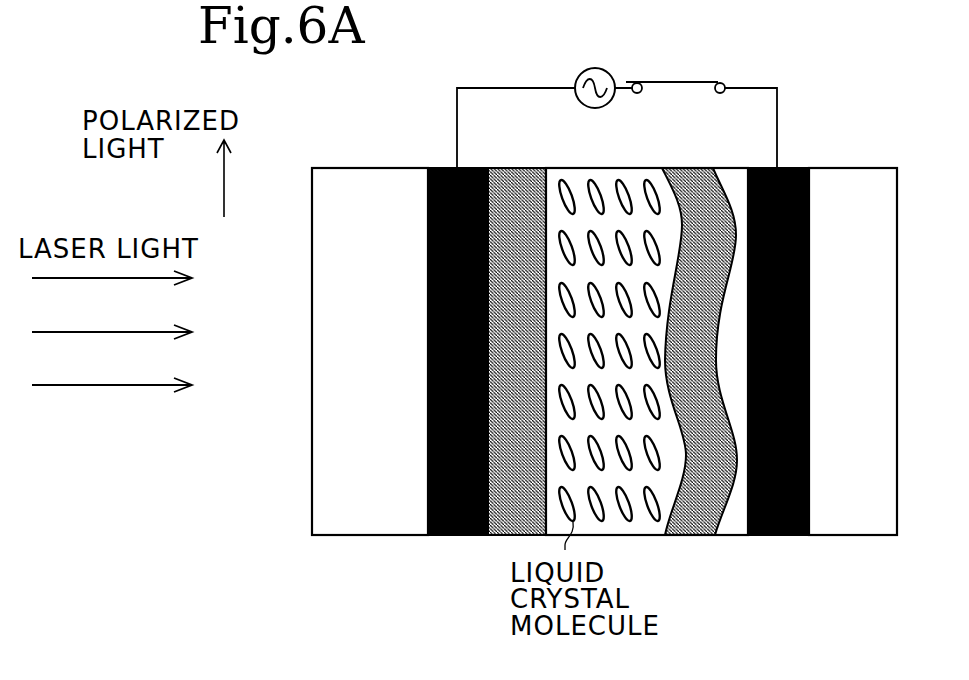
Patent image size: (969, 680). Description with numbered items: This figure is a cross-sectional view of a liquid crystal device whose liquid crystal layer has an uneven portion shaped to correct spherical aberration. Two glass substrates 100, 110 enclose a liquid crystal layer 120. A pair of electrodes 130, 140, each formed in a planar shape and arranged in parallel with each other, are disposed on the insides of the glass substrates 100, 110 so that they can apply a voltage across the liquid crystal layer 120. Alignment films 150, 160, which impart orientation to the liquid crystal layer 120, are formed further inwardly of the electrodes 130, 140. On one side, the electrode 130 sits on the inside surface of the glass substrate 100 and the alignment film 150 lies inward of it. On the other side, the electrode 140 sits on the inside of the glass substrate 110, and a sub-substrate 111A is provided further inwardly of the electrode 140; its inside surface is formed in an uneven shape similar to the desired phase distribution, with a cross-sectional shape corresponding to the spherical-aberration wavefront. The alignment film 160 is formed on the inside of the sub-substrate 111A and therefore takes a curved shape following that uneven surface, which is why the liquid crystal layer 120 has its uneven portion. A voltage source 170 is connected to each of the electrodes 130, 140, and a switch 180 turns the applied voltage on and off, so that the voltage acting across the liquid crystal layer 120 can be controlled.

The glass substrate 100 is at (343, 180).
The glass substrate 110 is at (862, 178).
The sub-substrate 111A is at (732, 527).
The liquid crystal layer 120 is at (642, 522).
The electrode 130 is at (450, 537).
The electrode 140 is at (787, 537).
The alignment film 150 is at (508, 176).
The alignment film 160 is at (684, 178).
The voltage source 170 is at (584, 70).
The switch 180 is at (658, 82).